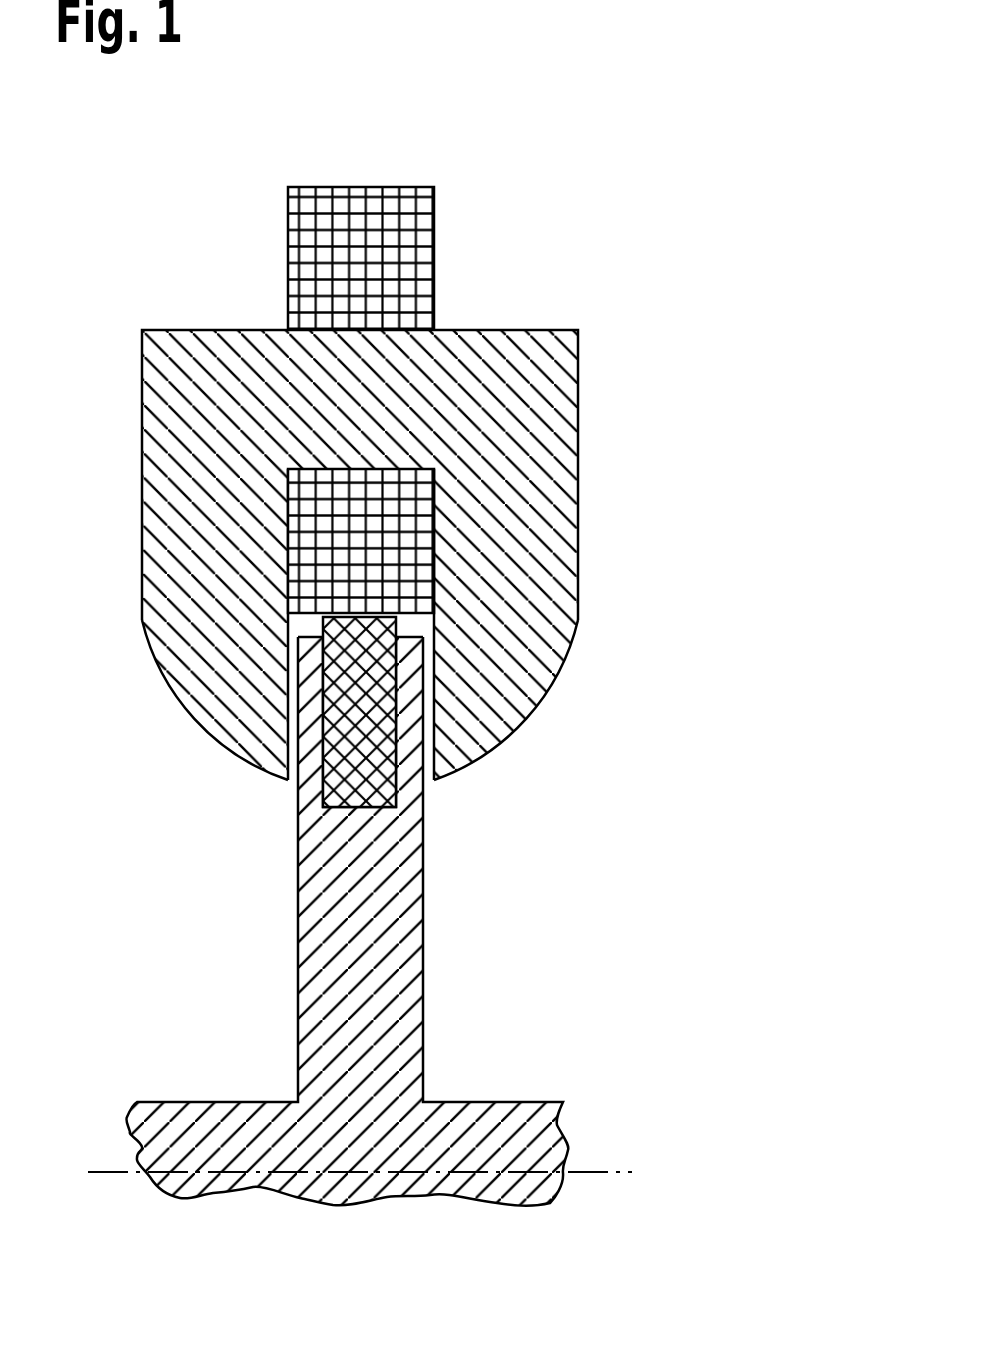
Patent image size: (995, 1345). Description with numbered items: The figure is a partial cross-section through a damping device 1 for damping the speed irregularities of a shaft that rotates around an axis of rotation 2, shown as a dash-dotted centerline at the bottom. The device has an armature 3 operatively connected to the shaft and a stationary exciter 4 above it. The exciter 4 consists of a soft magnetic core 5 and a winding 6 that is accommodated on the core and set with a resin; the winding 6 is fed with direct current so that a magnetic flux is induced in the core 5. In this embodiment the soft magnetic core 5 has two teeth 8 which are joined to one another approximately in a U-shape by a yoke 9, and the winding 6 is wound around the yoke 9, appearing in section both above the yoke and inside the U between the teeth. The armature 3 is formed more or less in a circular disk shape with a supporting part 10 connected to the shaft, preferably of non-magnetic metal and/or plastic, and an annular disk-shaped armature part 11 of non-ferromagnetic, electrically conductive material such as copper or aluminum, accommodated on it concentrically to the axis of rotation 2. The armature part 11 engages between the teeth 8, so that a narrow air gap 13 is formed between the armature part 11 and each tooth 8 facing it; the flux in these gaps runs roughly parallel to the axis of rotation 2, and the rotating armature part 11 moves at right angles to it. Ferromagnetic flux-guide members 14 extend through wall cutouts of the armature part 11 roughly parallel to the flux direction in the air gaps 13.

The damping device 1 is at (434, 701).
The axis of rotation 2 is at (610, 1172).
The armature 3 is at (357, 911).
The exciter 4 is at (372, 466).
The soft magnetic core 5 is at (365, 532).
The winding 6 is at (362, 208).
The teeth 8 is at (160, 616).
The yoke 9 is at (247, 343).
The supporting part 10 is at (407, 980).
The armature part 11 is at (363, 810).
The air gap 13 is at (293, 693).
The flux-guide member 14 is at (308, 720).